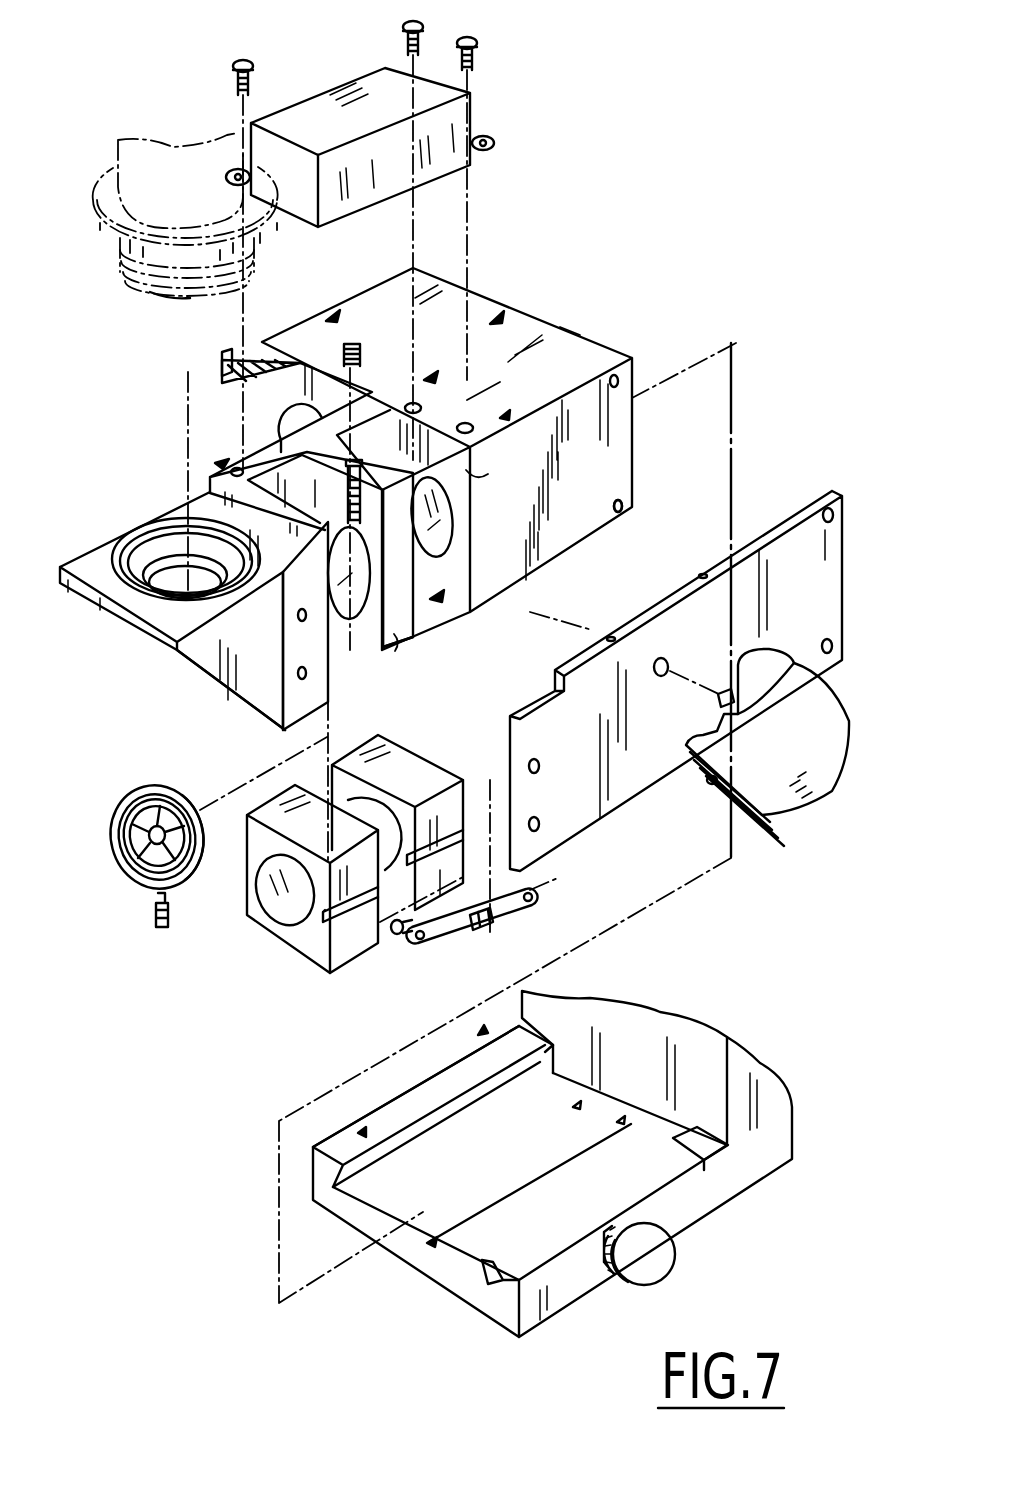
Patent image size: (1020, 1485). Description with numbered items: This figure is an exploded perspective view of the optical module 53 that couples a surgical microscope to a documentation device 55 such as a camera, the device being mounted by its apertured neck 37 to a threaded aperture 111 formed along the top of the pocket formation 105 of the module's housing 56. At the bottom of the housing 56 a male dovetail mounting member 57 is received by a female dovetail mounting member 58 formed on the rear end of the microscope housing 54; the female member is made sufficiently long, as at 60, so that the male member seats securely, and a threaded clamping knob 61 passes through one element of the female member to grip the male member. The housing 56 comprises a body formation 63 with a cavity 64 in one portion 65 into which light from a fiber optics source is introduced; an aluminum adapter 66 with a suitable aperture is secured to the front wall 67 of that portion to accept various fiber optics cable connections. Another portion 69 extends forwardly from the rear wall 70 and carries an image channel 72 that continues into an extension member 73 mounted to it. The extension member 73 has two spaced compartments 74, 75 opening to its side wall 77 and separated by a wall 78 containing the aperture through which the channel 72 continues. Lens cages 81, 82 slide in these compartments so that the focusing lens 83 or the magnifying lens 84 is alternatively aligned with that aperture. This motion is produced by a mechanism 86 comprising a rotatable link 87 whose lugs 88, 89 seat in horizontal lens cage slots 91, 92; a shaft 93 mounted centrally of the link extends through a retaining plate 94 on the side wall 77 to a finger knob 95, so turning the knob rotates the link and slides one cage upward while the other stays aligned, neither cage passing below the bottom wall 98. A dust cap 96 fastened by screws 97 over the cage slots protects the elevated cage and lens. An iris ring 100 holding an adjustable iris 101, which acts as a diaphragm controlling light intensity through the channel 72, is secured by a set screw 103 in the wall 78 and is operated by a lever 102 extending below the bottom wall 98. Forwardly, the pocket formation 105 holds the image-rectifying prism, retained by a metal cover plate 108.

The apertured neck 37 is at (152, 292).
The module 53 is at (684, 184).
The microscope housing 54 is at (757, 1070).
The documentation device 55 is at (118, 143).
The housing 56 is at (492, 323).
The male dovetail mounting member 57 is at (440, 603).
The female dovetail mounting member 58 is at (355, 1170).
The length of female member 60 is at (526, 1178).
The threaded clamping knob 61 is at (676, 1254).
The body formation 63 is at (398, 283).
The cavity 64 is at (283, 413).
The portion 65 is at (368, 338).
The aluminum adapter 66 is at (221, 357).
The front wall 67 is at (297, 360).
The portion 69 is at (500, 382).
The rear wall 70 is at (560, 327).
The image channel 72 is at (456, 528).
The extension member 73 is at (216, 462).
The compartment 74 is at (486, 474).
The compartment 75 is at (328, 688).
The side wall 77 is at (622, 446).
The wall 78 is at (399, 589).
The lens cage 81 is at (430, 762).
The lens cage 82 is at (290, 938).
The focusing lens 83 is at (330, 807).
The magnifying lens 84 is at (258, 917).
The mechanism 86 is at (545, 897).
The rotatable link 87 is at (440, 940).
The lug 88 is at (528, 876).
The lug 89 is at (395, 933).
The lens cage slot 91 is at (460, 830).
The lens cage slot 92 is at (327, 930).
The shaft 93 is at (487, 932).
The retaining plate 94 is at (648, 780).
The finger knob 95 is at (768, 812).
The dust cap 96 is at (326, 95).
The screws 97 is at (462, 38).
The bottom wall 98 is at (592, 538).
The iris ring 100 is at (187, 767).
The adjustable iris 101 is at (135, 863).
The lever 102 is at (156, 927).
The set screw 103 is at (426, 379).
The pocket formation 105 is at (200, 657).
The metal cover plate 108 is at (244, 703).
The threaded aperture 111 is at (125, 604).